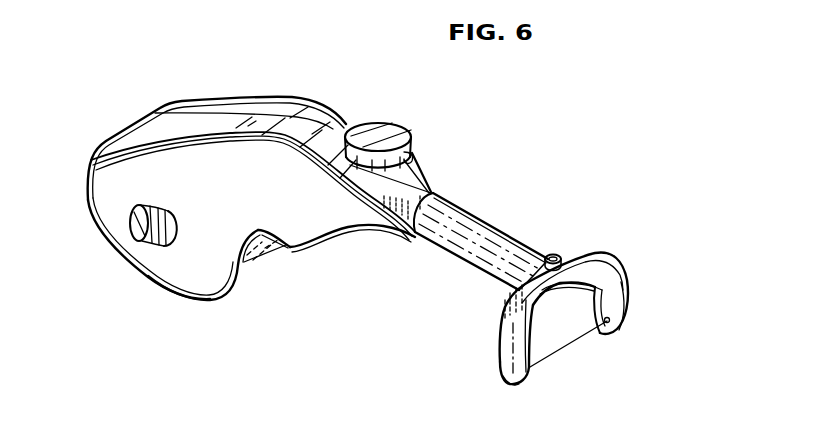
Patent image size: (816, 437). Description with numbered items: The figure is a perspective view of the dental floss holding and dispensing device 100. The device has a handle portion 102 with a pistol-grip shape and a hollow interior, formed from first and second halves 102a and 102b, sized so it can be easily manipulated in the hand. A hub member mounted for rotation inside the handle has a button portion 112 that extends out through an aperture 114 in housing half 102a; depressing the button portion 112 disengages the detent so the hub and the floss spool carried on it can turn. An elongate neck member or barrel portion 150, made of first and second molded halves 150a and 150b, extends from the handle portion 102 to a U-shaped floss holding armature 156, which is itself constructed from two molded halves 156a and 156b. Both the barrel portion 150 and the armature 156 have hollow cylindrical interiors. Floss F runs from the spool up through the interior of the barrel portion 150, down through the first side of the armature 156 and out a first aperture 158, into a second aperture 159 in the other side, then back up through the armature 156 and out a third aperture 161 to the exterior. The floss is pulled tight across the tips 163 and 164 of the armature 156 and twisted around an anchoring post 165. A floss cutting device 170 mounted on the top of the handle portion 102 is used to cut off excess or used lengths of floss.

The dispensing device 100 is at (152, 313).
The handle portion 102 is at (128, 267).
The first half of handle portion 102a is at (208, 285).
The second half of handle portion 102b is at (277, 246).
The button portion 112 is at (146, 210).
The aperture 114 is at (169, 219).
The barrel portion 150 is at (447, 237).
The first molded half of barrel portion 150a is at (493, 265).
The second molded half of barrel portion 150b is at (530, 250).
The floss holding armature 156 is at (503, 377).
The first molded half of armature 156a is at (507, 337).
The second molded half of armature 156b is at (620, 277).
The first aperture 158 is at (536, 368).
The second aperture 159 is at (608, 333).
The third aperture 161 is at (600, 250).
The tip of armature 163 is at (516, 388).
The tip of armature 164 is at (629, 322).
The anchoring post 165 is at (566, 256).
The floss cutting device 170 is at (391, 118).